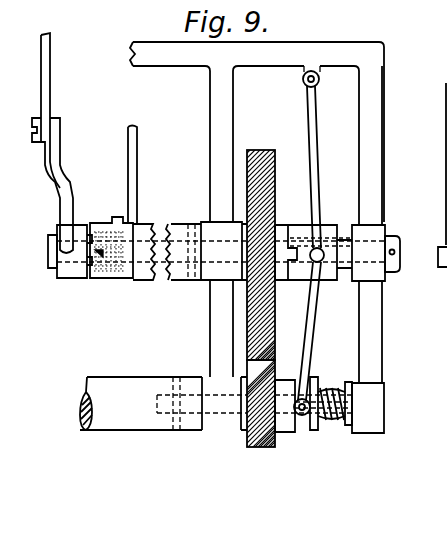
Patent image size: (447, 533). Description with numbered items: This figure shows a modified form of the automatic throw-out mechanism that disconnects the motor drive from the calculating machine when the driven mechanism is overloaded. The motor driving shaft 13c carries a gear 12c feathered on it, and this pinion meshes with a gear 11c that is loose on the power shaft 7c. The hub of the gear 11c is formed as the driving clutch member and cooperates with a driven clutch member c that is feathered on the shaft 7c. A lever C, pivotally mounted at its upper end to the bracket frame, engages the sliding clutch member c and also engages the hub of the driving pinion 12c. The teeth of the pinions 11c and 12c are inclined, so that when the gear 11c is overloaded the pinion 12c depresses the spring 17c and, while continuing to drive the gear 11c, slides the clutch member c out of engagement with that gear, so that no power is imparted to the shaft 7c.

The shaft 7c is at (345, 258).
The gear 11c is at (264, 149).
The gear 12c is at (258, 452).
The motor driving shaft 13c is at (216, 404).
The spring 17c is at (332, 423).
The lever C is at (316, 155).
The driven clutch member c is at (298, 228).